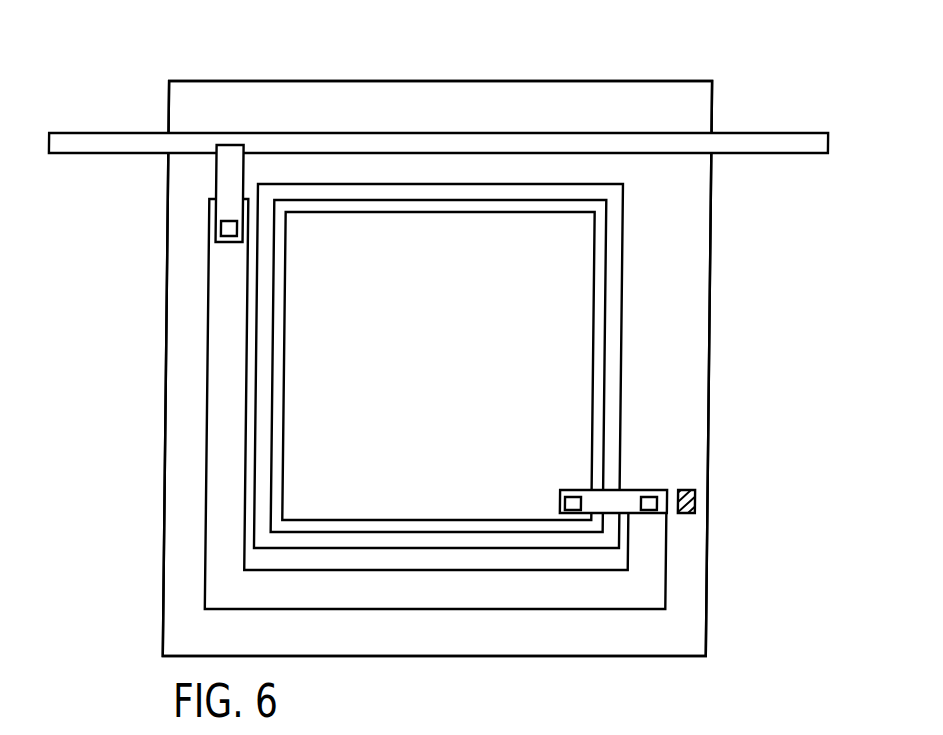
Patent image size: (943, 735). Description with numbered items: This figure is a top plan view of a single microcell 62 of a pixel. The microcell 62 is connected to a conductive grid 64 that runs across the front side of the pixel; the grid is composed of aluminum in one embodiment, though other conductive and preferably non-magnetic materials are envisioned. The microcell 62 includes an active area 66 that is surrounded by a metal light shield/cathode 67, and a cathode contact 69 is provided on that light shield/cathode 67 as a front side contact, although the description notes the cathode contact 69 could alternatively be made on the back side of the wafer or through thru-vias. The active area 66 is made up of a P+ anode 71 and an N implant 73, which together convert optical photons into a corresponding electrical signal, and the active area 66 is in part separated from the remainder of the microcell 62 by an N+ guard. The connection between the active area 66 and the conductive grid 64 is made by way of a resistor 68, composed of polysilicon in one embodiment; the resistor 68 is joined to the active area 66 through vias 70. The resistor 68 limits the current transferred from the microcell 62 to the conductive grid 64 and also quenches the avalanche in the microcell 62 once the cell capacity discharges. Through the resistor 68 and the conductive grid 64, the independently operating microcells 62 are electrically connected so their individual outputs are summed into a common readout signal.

The microcell 62 is at (549, 66).
The conductive grid 64 is at (768, 153).
The active area 66 is at (606, 184).
The metal light shield/cathode 67 is at (711, 313).
The resistor 68 is at (208, 402).
The cathode contact 69 is at (695, 497).
The vias 70 is at (228, 243).
The P+ anode 71 is at (615, 265).
The N implant 73 is at (449, 375).